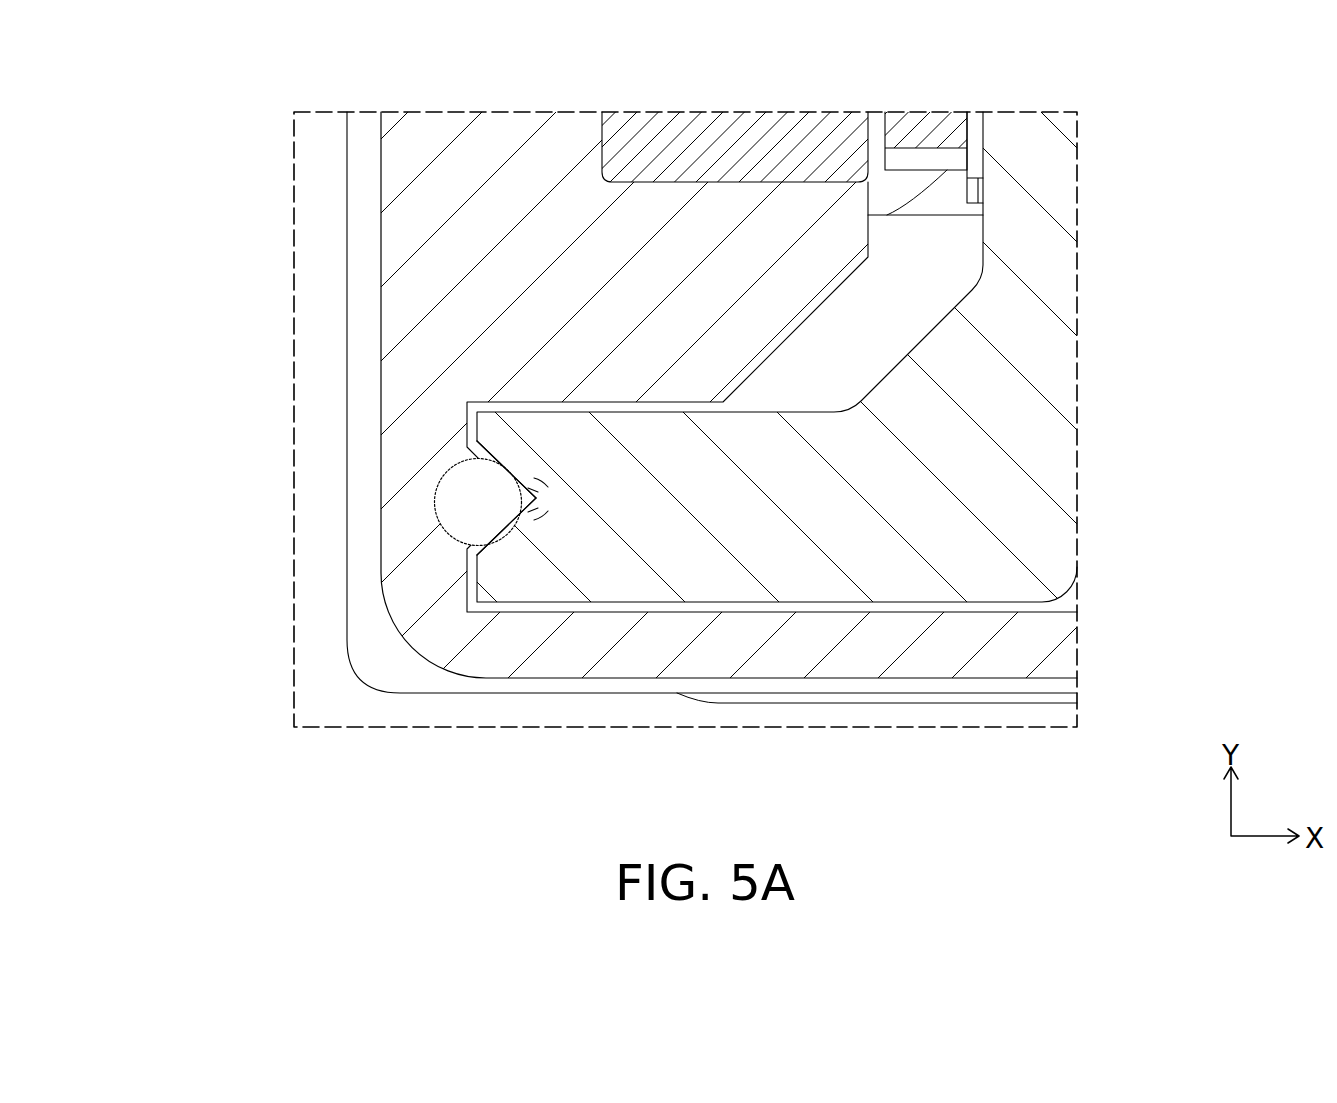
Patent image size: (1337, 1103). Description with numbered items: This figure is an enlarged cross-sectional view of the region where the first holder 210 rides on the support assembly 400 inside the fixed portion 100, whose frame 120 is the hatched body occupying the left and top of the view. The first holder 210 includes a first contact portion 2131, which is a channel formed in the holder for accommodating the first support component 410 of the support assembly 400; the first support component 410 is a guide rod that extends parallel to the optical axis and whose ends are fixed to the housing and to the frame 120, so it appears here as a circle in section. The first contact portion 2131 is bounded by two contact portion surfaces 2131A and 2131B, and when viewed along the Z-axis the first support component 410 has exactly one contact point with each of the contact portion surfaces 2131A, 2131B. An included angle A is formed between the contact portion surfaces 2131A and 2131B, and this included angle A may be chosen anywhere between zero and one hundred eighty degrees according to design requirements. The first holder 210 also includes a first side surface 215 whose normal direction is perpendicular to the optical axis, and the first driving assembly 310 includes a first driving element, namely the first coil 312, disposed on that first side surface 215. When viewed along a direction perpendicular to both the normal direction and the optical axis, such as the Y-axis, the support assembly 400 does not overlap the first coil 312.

The frame 120 is at (495, 152).
The fixed portion 100 is at (712, 407).
The first holder 210 is at (1015, 490).
The first side surface 215 is at (983, 237).
The first coil 312 is at (928, 135).
The first driving assembly 310 is at (975, 157).
The first contact portion 2131 is at (543, 532).
The contact portion surface 2131A is at (492, 547).
The contact portion surface 2131B is at (508, 473).
The first support component 410 is at (458, 490).
The support assembly 400 is at (478, 502).
The included angle A is at (522, 502).